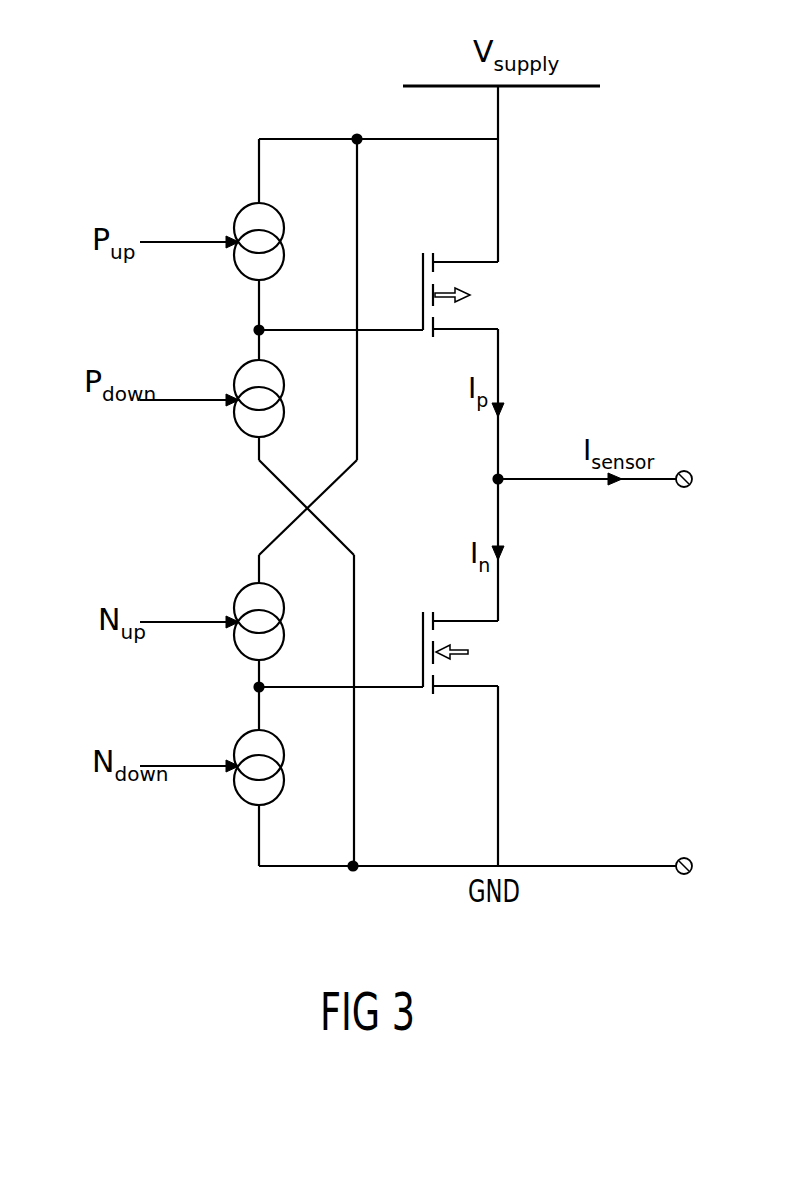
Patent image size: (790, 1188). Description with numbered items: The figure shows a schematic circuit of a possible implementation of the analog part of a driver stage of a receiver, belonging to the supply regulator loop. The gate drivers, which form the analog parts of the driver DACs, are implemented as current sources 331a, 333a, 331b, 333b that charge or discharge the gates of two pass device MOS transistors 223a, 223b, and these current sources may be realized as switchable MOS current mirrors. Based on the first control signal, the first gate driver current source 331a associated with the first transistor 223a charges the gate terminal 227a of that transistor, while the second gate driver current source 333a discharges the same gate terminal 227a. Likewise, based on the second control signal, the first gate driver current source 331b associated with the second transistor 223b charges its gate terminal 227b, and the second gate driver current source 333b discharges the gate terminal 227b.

The first gate driver current source 331a is at (243, 213).
The second gate driver current source 333a is at (241, 381).
The first gate driver current source 331b is at (241, 596).
The second gate driver current source 333b is at (240, 738).
The first transistor 223a is at (471, 261).
The second transistor 223b is at (470, 619).
The gate terminal 227a is at (471, 331).
The gate terminal 227b is at (460, 688).